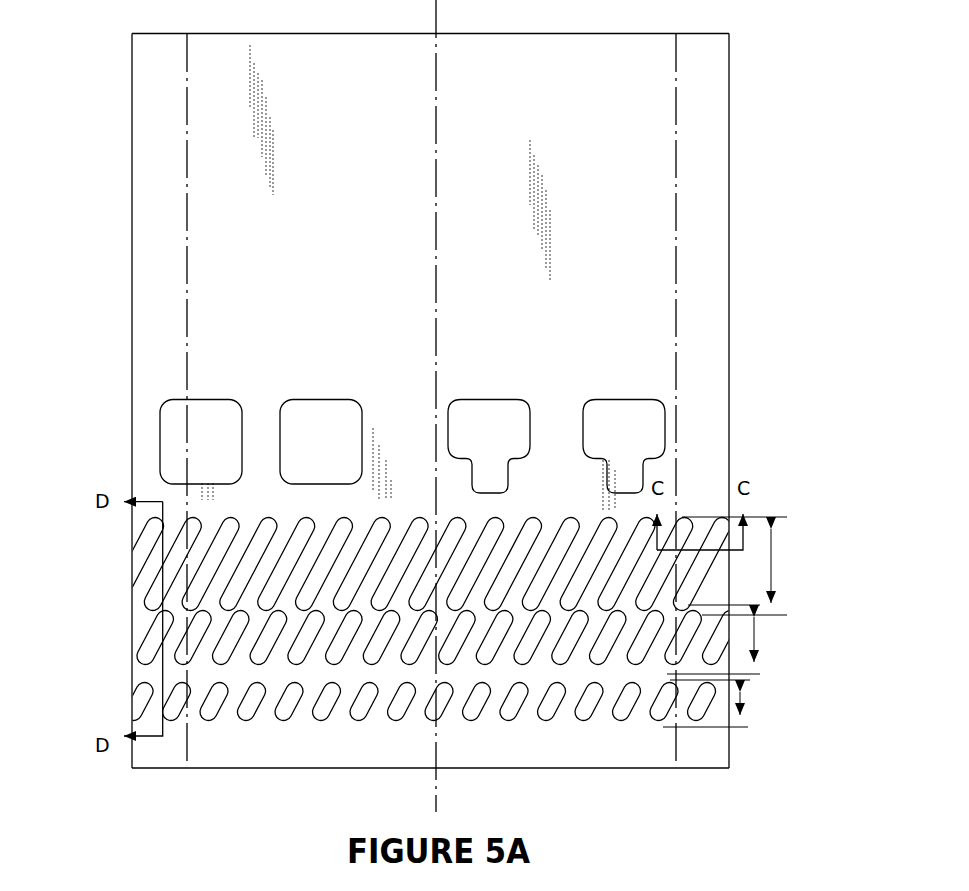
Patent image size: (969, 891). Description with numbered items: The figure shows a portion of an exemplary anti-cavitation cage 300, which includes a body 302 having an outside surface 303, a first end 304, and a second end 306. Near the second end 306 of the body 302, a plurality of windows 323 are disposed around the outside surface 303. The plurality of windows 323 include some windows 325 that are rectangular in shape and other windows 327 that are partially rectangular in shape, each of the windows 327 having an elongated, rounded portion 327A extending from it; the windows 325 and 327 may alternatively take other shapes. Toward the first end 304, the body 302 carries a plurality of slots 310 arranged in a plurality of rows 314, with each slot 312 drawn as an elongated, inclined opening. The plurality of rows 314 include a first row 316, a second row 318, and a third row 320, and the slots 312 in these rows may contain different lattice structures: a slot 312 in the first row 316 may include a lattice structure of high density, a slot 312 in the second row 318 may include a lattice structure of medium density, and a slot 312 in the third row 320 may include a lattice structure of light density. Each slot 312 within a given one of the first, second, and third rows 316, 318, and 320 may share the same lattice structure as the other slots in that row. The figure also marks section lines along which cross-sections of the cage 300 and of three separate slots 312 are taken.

The anti-cavitation cage 300 is at (781, 117).
The body 302 is at (710, 480).
The outside surface 303 is at (710, 443).
The first end 304 is at (708, 768).
The second end 306 is at (705, 33).
The plurality of slots 310 is at (102, 637).
The slot 312 is at (632, 608).
The plurality of rows 314 is at (102, 563).
The first row 316 is at (715, 692).
The second row 318 is at (448, 714).
The third row 320 is at (745, 562).
The plurality of windows 323 is at (296, 298).
The windows 325 is at (286, 412).
The windows 327 is at (592, 411).
The elongated, rounded portion 327A is at (615, 475).